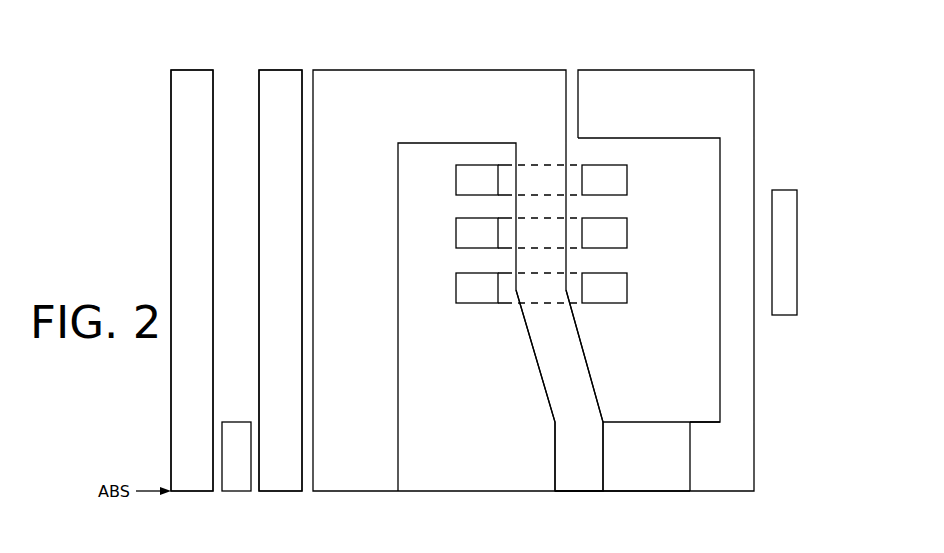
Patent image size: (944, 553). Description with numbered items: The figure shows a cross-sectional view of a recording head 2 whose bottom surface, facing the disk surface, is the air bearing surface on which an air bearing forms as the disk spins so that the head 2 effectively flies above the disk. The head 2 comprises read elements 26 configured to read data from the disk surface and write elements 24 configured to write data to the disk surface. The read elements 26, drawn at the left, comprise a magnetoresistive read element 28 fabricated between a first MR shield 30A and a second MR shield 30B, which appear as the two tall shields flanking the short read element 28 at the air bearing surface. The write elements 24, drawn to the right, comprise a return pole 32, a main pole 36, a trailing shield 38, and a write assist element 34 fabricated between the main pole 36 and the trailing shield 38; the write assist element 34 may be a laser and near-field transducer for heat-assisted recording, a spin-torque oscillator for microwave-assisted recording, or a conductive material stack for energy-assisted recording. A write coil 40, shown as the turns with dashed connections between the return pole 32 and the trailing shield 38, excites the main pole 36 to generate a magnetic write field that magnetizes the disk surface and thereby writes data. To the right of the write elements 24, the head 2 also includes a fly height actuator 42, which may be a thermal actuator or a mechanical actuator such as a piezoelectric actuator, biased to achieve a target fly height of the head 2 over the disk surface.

The head 2 is at (145, 42).
The write elements 24 is at (759, 61).
The read elements 26 is at (303, 61).
The magnetoresistive (MR) read element 28 is at (236, 491).
The MR shield 30A is at (189, 491).
The MR shield 30B is at (281, 491).
The return pole 32 is at (353, 491).
The write assist element 34 is at (646, 491).
The main pole 36 is at (578, 491).
The trailing shield 38 is at (721, 491).
The write coil 40 is at (478, 303).
The fly height actuator (FHA) 42 is at (785, 315).